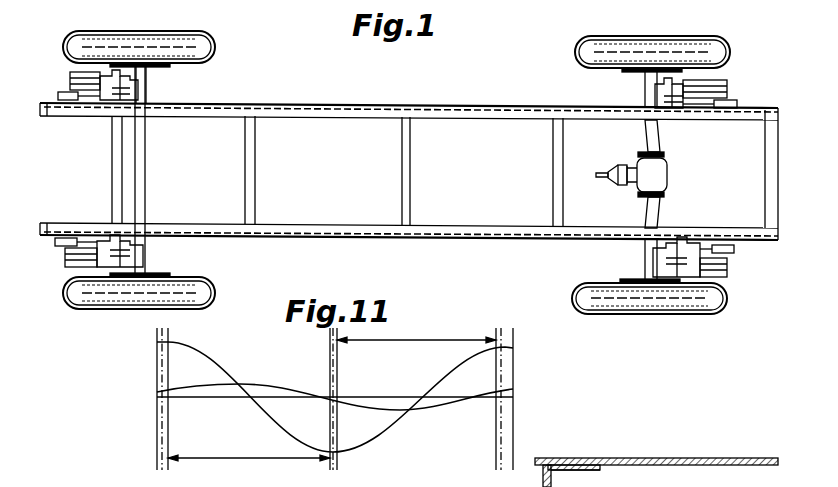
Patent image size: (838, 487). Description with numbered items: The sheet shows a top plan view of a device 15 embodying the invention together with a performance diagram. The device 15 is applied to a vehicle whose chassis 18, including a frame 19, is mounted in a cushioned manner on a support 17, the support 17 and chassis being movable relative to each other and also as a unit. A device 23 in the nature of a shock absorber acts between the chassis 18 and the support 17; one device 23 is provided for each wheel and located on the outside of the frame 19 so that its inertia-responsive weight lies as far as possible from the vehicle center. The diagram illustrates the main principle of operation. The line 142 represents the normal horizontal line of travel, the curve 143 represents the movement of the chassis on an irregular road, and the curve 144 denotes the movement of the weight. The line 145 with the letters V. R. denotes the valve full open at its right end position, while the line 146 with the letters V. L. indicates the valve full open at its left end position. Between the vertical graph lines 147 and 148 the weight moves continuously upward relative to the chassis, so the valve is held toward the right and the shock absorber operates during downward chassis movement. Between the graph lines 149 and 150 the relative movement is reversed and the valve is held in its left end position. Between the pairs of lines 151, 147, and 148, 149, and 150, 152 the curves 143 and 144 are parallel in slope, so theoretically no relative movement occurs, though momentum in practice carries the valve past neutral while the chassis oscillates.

In FIG. 1, the device 15 is at (284, 74).
In FIG. 1, the support 17 is at (135, 27).
In FIG. 1, the frame 19 is at (441, 106).
In FIG. 1, the device 23 is at (63, 77).
In FIG. 11, the chassis 18 is at (742, 466).
In FIG. 11, the line 142 is at (216, 400).
In FIG. 11, the curve 143 is at (226, 350).
In FIG. 11, the curve 144 is at (281, 390).
In FIG. 11, the line 145 is at (262, 465).
In FIG. 11, the line 146 is at (396, 342).
In FIG. 11, the vertical graph line 147 is at (168, 432).
In FIG. 11, the vertical graph line 148 is at (330, 353).
In FIG. 11, the graph line 149 is at (337, 377).
In FIG. 11, the graph line 150 is at (496, 436).
In FIG. 11, the line 151 is at (160, 372).
In FIG. 11, the line 152 is at (502, 376).